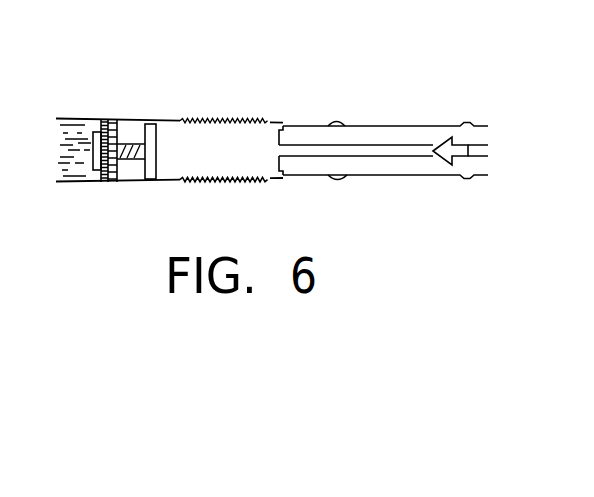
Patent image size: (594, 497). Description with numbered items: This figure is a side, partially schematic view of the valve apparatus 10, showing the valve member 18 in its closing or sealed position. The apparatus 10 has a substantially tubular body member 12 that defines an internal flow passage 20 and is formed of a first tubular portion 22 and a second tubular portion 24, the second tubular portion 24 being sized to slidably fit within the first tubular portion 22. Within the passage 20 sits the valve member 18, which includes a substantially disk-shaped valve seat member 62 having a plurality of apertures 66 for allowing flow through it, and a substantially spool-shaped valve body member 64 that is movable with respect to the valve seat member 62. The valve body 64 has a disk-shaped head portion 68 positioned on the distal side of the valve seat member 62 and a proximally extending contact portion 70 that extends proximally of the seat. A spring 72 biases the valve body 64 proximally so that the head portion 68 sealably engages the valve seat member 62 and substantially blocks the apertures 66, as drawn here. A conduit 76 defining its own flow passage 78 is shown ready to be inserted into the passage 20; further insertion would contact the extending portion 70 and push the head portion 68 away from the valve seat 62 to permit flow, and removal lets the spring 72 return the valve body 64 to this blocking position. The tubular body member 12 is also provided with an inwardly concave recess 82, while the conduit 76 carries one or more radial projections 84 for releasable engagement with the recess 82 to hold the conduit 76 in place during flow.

The apparatus 10 is at (276, 82).
The tubular body member 12 is at (200, 120).
The valve member 18 is at (140, 100).
The flow passage 20 is at (230, 163).
The first tubular portion 22 is at (70, 118).
The second tubular portion 24 is at (305, 126).
The valve seat member 62 is at (108, 118).
The valve body member 64 is at (129, 172).
The apertures 66 is at (103, 128).
The head portion 68 is at (92, 156).
The contact portion 70 is at (156, 163).
The spring 72 is at (138, 144).
The conduit 76 is at (413, 127).
The flow passage 78 is at (370, 157).
The inwardly concave recess 82 is at (340, 121).
The radial projections 84 is at (468, 126).